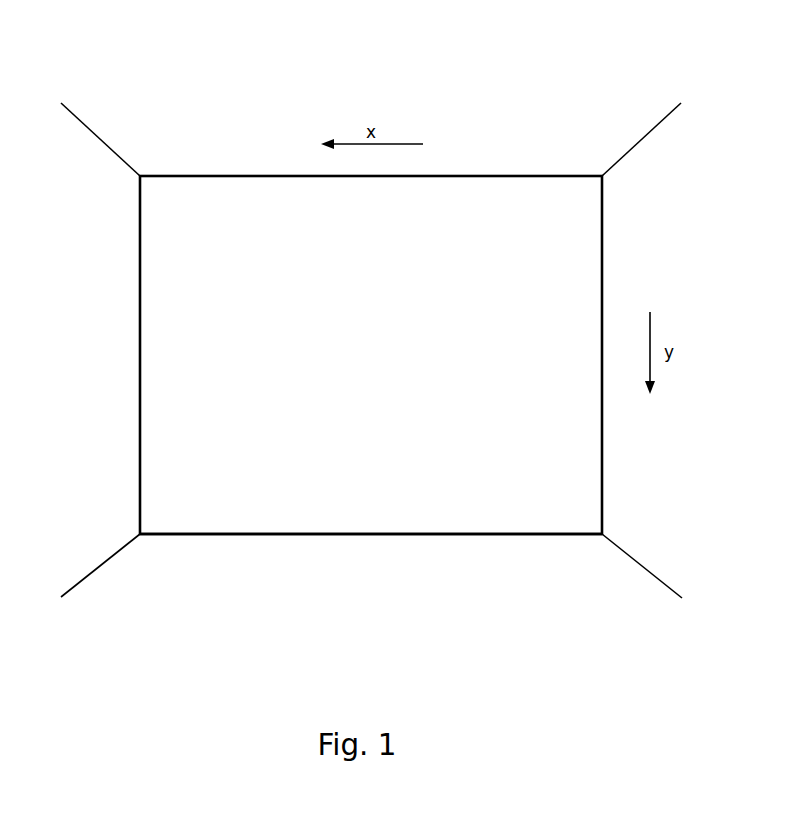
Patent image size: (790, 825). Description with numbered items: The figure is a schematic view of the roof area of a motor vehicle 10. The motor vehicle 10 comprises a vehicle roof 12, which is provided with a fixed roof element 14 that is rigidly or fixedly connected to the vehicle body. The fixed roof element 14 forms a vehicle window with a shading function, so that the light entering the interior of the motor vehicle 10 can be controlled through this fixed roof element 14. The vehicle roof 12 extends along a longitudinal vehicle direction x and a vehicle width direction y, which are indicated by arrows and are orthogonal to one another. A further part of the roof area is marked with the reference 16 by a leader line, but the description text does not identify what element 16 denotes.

The motor vehicle 10 is at (371, 324).
The vehicle roof 12 is at (238, 380).
The fixed roof element 14 is at (463, 380).
The bottom edge 16 is at (371, 478).